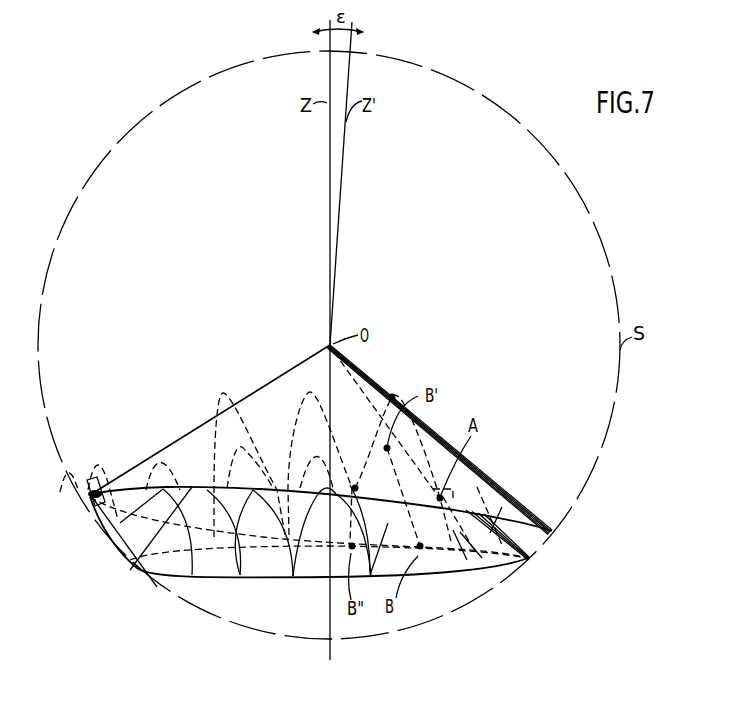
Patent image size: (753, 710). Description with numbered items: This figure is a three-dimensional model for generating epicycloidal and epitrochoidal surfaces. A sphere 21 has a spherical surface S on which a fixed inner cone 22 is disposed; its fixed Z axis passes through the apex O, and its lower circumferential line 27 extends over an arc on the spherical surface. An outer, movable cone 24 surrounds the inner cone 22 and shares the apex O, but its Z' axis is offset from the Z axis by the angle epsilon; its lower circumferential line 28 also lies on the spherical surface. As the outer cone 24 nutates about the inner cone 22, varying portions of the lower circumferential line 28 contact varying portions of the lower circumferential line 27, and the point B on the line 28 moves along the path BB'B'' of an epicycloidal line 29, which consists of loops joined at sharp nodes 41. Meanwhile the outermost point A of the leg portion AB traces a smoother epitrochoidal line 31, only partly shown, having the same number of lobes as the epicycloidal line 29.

The sphere 21 is at (85, 187).
The fixed inner cone 22 is at (482, 560).
The outer, movable cone 24 is at (187, 432).
The lower circumferential line 27 is at (452, 578).
The lower circumferential line 28 is at (462, 510).
The epicycloidal line 29 is at (310, 520).
The epitrochoidal line 31 is at (247, 412).
The nodes 41 is at (237, 577).